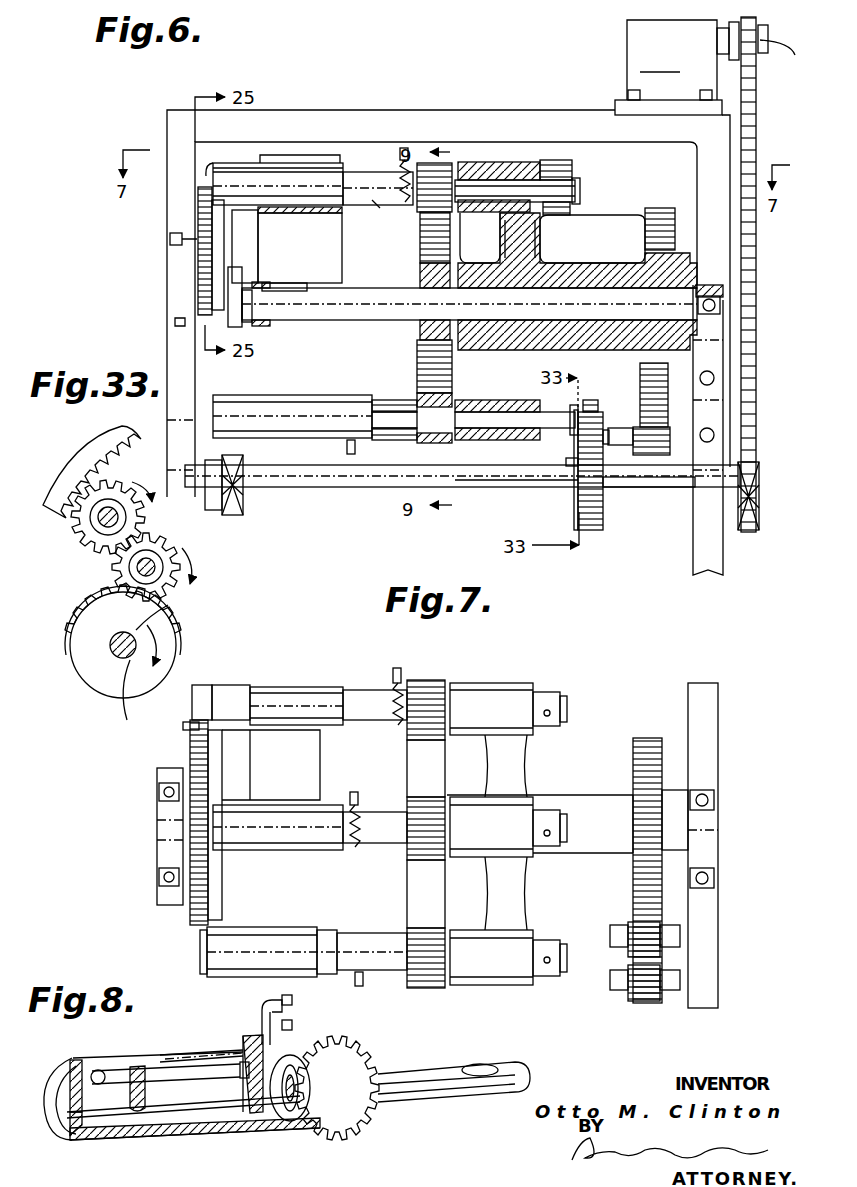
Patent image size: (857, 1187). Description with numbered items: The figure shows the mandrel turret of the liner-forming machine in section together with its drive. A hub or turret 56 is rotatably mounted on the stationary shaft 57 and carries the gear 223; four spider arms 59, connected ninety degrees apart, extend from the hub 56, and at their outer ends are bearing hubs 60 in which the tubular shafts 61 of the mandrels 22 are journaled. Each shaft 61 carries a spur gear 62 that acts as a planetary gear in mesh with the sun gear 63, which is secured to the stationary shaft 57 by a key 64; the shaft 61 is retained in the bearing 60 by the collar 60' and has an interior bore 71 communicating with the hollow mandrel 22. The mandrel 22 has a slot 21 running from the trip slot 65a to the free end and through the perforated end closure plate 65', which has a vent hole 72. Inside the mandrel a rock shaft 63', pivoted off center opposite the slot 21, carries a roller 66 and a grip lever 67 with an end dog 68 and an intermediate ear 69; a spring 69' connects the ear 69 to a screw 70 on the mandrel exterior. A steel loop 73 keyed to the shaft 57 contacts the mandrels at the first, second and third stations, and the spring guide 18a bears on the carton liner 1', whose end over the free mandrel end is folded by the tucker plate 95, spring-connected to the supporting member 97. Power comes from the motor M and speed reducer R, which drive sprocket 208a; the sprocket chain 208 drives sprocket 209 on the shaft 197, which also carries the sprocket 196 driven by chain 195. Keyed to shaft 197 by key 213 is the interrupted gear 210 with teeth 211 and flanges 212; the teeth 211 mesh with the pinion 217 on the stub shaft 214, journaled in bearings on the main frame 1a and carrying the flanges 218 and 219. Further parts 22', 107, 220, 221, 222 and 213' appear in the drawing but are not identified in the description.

In FIG. 6, the carton liner 1' is at (309, 162).
In FIG. 7, the carton liner 1' is at (295, 688).
In FIG. 6, the main frame 1a is at (705, 552).
In FIG. 7, the main frame 1a is at (193, 710).
In FIG. 6, the mandrel 22 is at (315, 279).
In FIG. 8, the mandrel 22 is at (164, 1087).
In FIG. 7, the tube 22' is at (244, 684).
In FIG. 6, the grip lever 67 is at (402, 158).
In FIG. 7, the grip lever 67 is at (400, 668).
In FIG. 8, the grip lever 67 is at (262, 1012).
In FIG. 6, the spur gear 62 is at (420, 160).
In FIG. 7, the spur gear 62 is at (407, 745).
In FIG. 6, the bearing hub 60 is at (515, 166).
In FIG. 7, the bearing hub 60 is at (491, 834).
In FIG. 6, the tubular shaft 61 is at (520, 185).
In FIG. 7, the tubular shaft 61 is at (567, 712).
In FIG. 8, the tubular shaft 61 is at (416, 1075).
In FIG. 6, the collar 60' is at (579, 213).
In FIG. 6, the gear 223 is at (676, 193).
In FIG. 33, the gear 223 is at (136, 424).
In FIG. 7, the gear 223 is at (652, 738).
In FIG. 6, the hub or turret 56 is at (600, 273).
In FIG. 7, the hub or turret 56 is at (600, 808).
In FIG. 6, the stationary shaft 57 is at (390, 290).
In FIG. 7, the stationary shaft 57 is at (310, 827).
In FIG. 6, the spider arm 59 is at (517, 252).
In FIG. 7, the spider arm 59 is at (512, 806).
In FIG. 6, the key 64 is at (415, 305).
In FIG. 6, the sun gear 63 is at (410, 391).
In FIG. 6, the screw 70 is at (356, 206).
In FIG. 6, the spring 69' is at (369, 222).
In FIG. 6, the tucker plate 95 is at (200, 195).
In FIG. 7, the tucker plate 95 is at (188, 740).
In FIG. 6, the supporting member 97 is at (196, 248).
In FIG. 7, the supporting member 97 is at (215, 728).
In FIG. 6, the spring guide 18a is at (305, 276).
In FIG. 6, the interior bore 71 is at (505, 398).
In FIG. 8, the interior bore 71 is at (486, 1065).
In FIG. 6, the sprocket 196 is at (462, 463).
In FIG. 6, the chain 195 is at (243, 508).
In FIG. 6, the key 213 is at (549, 452).
In FIG. 6, the shaft 197 is at (533, 486).
In FIG. 33, the shaft 197 is at (126, 690).
In FIG. 6, the flange 219 is at (597, 396).
In FIG. 6, the gear 221 is at (655, 385).
In FIG. 33, the gear 221 is at (76, 540).
In FIG. 7, the gear 221 is at (636, 948).
In FIG. 6, the pinion 217 is at (592, 414).
In FIG. 33, the pinion 217 is at (114, 578).
In FIG. 6, the gear 220 is at (634, 440).
In FIG. 7, the gear 220 is at (640, 1000).
In FIG. 6, the flange 218 is at (606, 460).
In FIG. 6, the interrupted gear 210 is at (590, 516).
In FIG. 33, the interrupted gear 210 is at (80, 645).
In FIG. 6, the flange 212 is at (578, 528).
In FIG. 33, the flange 212 is at (85, 684).
In FIG. 6, the sprocket 209 is at (752, 468).
In FIG. 6, the sprocket chain 208 is at (752, 123).
In FIG. 6, the sprocket 208a is at (795, 55).
In FIG. 6, the motor M is at (622, 45).
In FIG. 6, the speed reducer R is at (640, 75).
In FIG. 33, the gear 222 is at (126, 519).
In FIG. 33, the stub shaft 214 is at (163, 552).
In FIG. 33, the gear teeth 211 is at (90, 600).
In FIG. 33, the pawl 213' is at (185, 609).
In FIG. 7, the steel loop 73 is at (293, 760).
In FIG. 7, the shaft 107 is at (200, 952).
In FIG. 8, the vent hole 72 is at (60, 1100).
In FIG. 8, the roller 66 is at (120, 1070).
In FIG. 8, the slot 21 is at (176, 1052).
In FIG. 8, the trip slot 65a is at (243, 1060).
In FIG. 8, the end dog 68 is at (292, 1002).
In FIG. 8, the intermediate ear 69 is at (301, 1024).
In FIG. 8, the perforated end closure plate 65' is at (99, 1118).
In FIG. 8, the rock shaft 63' is at (183, 1132).